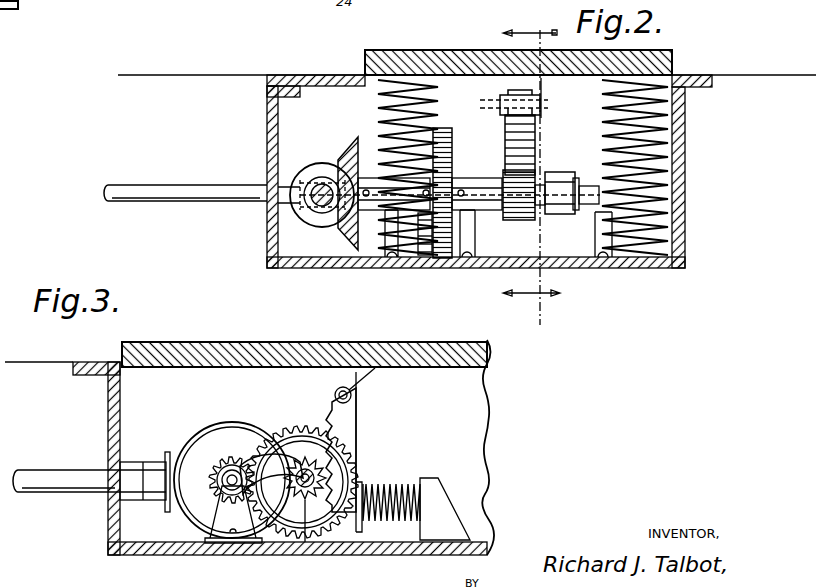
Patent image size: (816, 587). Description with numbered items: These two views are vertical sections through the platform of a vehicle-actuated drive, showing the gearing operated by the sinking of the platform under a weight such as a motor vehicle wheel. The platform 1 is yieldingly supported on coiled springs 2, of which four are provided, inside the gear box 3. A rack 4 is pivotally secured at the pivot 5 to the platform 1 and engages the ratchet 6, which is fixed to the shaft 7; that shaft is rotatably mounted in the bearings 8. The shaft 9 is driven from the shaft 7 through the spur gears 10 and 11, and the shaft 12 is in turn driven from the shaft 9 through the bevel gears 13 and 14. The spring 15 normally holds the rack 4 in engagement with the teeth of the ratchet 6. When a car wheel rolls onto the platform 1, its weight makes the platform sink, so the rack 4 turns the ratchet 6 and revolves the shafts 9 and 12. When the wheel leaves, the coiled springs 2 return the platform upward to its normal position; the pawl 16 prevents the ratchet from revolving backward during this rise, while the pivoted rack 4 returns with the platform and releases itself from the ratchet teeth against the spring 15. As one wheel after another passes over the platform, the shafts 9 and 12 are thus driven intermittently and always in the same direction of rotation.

In FIG. 2, the platform 1 is at (432, 60).
In FIG. 3, the platform 1 is at (340, 348).
In FIG. 2, the coiled springs 2 is at (432, 78).
In FIG. 2, the gear box 3 is at (685, 162).
In FIG. 2, the rack 4 is at (522, 140).
In FIG. 3, the rack 4 is at (344, 424).
In FIG. 2, the pivot 5 is at (536, 108).
In FIG. 3, the pivot 5 is at (352, 398).
In FIG. 2, the ratchet 6 is at (518, 178).
In FIG. 3, the ratchet 6 is at (312, 456).
In FIG. 2, the shaft 7 is at (575, 182).
In FIG. 3, the shaft 7 is at (305, 545).
In FIG. 2, the bearings 8 is at (470, 178).
In FIG. 2, the shaft 9 is at (181, 190).
In FIG. 2, the spur gear 10 is at (445, 130).
In FIG. 3, the spur gear 10 is at (297, 428).
In FIG. 2, the spur gear 11 is at (448, 170).
In FIG. 3, the spur gear 11 is at (236, 458).
In FIG. 2, the shaft 12 is at (318, 208).
In FIG. 3, the shaft 12 is at (52, 476).
In FIG. 2, the bevel gear 13 is at (342, 150).
In FIG. 3, the bevel gear 13 is at (198, 432).
In FIG. 2, the bevel gear 14 is at (312, 165).
In FIG. 3, the bevel gear 14 is at (165, 456).
In FIG. 3, the spring 15 is at (388, 483).
In FIG. 3, the pawl 16 is at (240, 462).